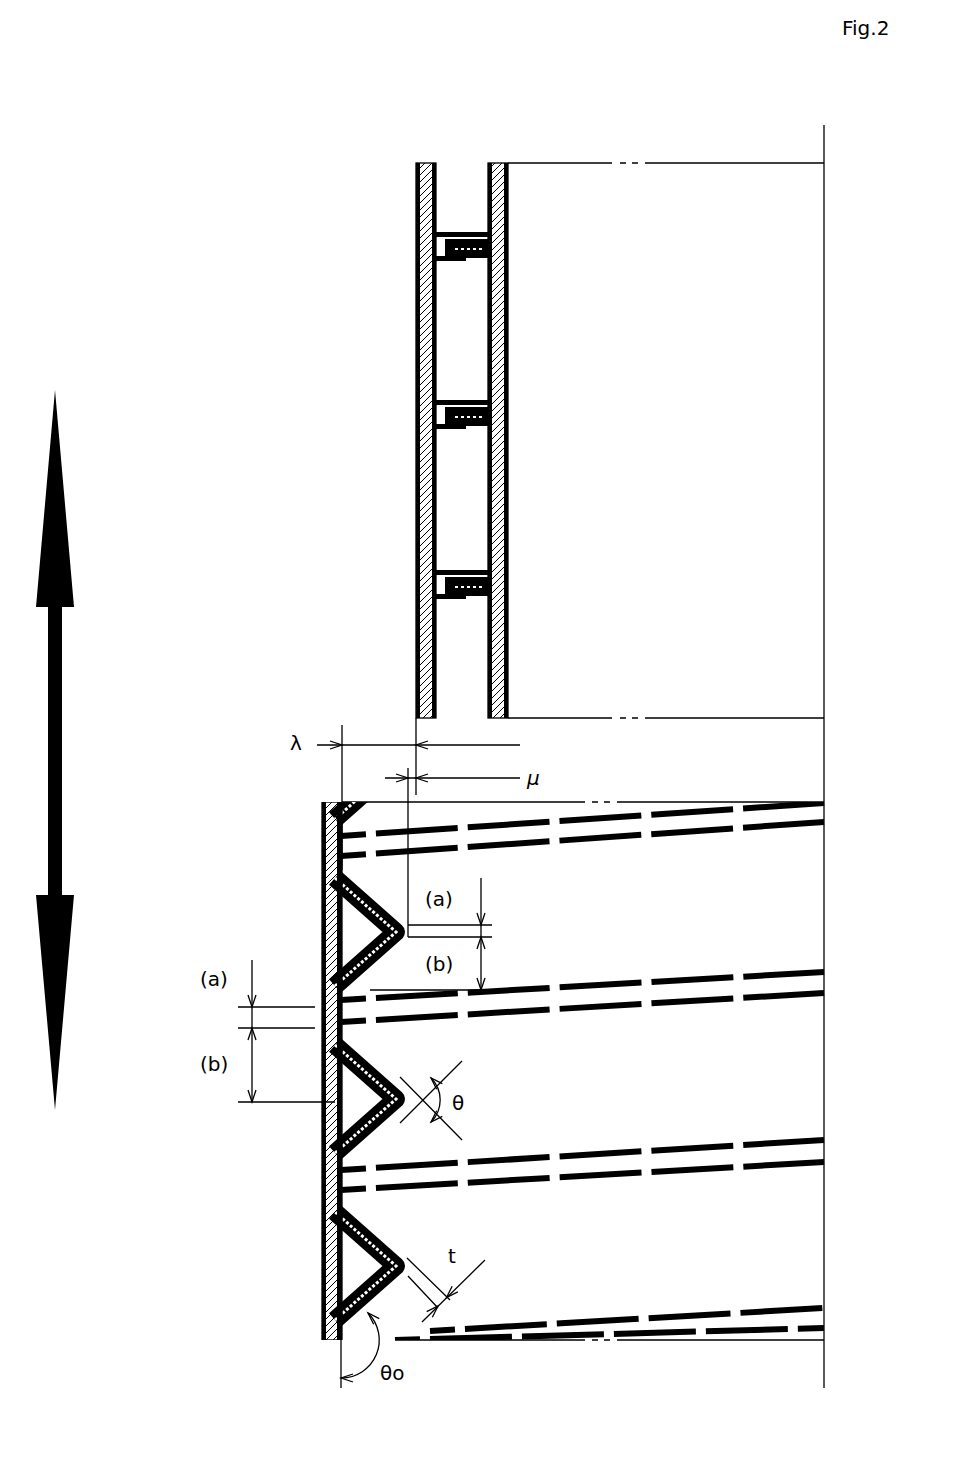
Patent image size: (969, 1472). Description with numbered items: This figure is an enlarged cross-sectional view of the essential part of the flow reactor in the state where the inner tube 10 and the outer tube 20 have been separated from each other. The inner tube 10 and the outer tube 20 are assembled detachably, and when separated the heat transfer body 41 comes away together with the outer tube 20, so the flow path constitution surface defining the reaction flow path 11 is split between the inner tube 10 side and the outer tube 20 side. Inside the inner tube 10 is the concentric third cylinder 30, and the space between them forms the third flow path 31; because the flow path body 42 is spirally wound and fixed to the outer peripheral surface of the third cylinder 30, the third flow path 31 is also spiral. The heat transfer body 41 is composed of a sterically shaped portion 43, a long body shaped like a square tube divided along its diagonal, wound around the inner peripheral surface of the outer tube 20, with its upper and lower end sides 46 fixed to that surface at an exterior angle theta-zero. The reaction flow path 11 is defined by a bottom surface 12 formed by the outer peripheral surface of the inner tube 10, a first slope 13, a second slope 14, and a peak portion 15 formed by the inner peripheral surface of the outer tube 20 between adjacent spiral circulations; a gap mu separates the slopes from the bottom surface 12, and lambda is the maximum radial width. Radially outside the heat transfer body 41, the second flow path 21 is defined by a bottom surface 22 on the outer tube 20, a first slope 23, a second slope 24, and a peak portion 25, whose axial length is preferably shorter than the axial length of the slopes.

The inner tube 10 is at (416, 196).
The reaction flow path 11 is at (386, 875).
The bottom surface 12 is at (416, 354).
The first slope 13 is at (425, 978).
The second slope 14 is at (398, 1068).
The peak portion 15 is at (341, 1016).
The outer tube 20 is at (322, 838).
The second flow path 21 is at (362, 1258).
The bottom surface 22 is at (355, 1283).
The first slope 23 is at (322, 898).
The second slope 24 is at (322, 962).
The peak portion 25 is at (395, 930).
The third cylinder 30 is at (508, 207).
The third flow path 31 is at (458, 192).
The heat transfer body 41 is at (352, 1302).
The flow path body 42 is at (508, 243).
The sterically shaped portion 43 is at (365, 1266).
The upper and lower end sides 46 is at (340, 1178).